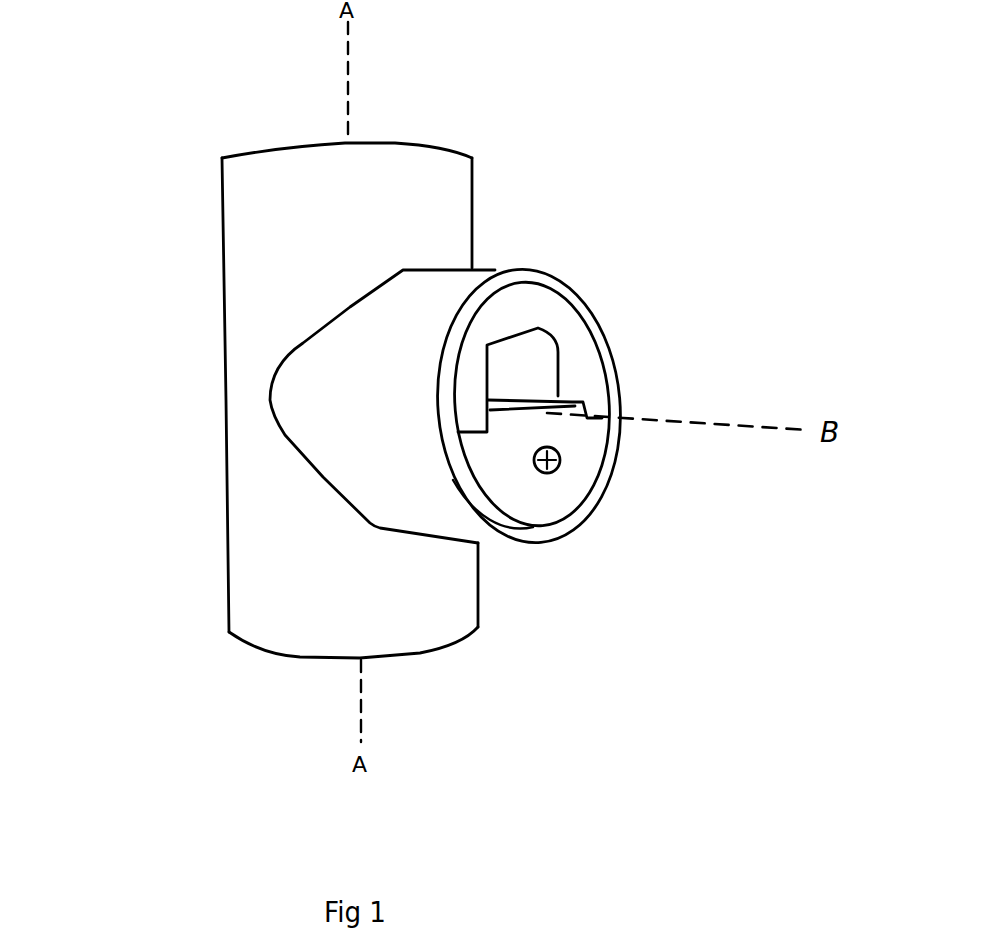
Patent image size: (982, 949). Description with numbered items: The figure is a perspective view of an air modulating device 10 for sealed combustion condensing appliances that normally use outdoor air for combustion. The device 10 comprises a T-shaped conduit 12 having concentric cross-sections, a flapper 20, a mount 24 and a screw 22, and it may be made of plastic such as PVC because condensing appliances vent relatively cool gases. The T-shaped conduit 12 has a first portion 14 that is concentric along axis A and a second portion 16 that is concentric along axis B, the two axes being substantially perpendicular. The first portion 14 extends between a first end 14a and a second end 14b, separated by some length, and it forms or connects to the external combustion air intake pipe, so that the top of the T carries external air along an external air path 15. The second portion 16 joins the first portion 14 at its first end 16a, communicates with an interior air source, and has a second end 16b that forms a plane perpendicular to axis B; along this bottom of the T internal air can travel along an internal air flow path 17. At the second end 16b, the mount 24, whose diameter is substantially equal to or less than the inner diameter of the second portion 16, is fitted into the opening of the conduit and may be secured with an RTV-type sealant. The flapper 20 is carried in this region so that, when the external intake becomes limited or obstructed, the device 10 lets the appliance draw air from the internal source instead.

The air modulating device 10 is at (97, 220).
The T-shaped conduit 12 is at (255, 497).
The first portion 14 is at (243, 228).
The first end 14a is at (470, 138).
The second end 14b is at (250, 662).
The external air path 15 is at (322, 97).
The second portion 16 is at (452, 513).
The first end 16a is at (357, 337).
The second end 16b is at (535, 257).
The internal air flow path 17 is at (545, 386).
The flapper 20 is at (520, 381).
The screw 22 is at (550, 473).
The mount 24 is at (548, 308).